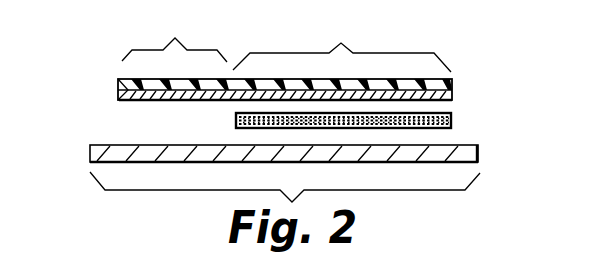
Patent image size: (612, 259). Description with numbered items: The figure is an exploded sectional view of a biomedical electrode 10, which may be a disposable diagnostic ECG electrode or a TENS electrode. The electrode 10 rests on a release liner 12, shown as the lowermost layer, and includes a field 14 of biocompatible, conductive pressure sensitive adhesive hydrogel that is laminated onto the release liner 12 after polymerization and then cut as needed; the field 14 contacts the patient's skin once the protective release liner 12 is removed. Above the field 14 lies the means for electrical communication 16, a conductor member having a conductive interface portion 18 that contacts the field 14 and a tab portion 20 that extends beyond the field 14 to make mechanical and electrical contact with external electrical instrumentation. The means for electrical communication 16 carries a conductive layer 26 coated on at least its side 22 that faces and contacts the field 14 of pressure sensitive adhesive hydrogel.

The biomedical electrode 10 is at (466, 77).
The release liner 12 is at (103, 149).
The field of pressure sensitive adhesive hydrogel 14 is at (235, 119).
The means for electrical communication 16 is at (128, 82).
The conductive interface portion 18 is at (342, 44).
The tab portion 20 is at (174, 37).
The side contacting field 22 is at (126, 99).
The conductive layer 26 is at (156, 97).